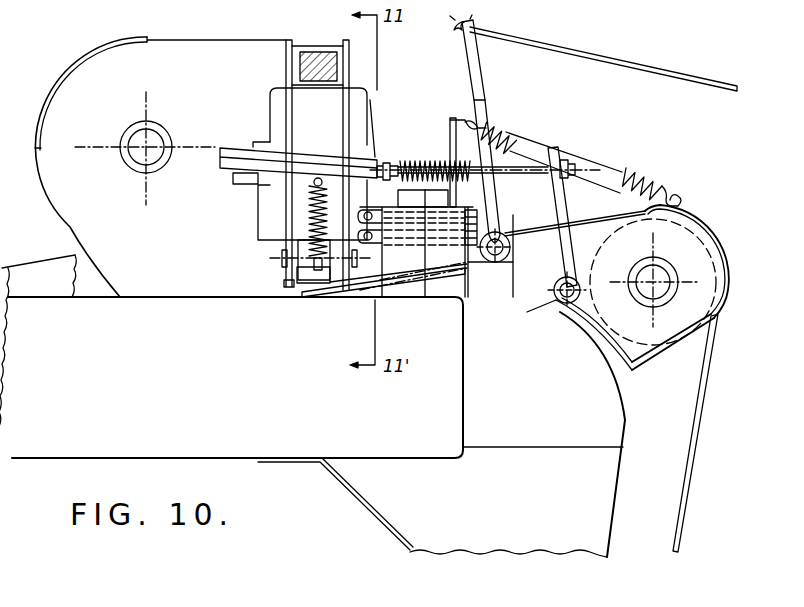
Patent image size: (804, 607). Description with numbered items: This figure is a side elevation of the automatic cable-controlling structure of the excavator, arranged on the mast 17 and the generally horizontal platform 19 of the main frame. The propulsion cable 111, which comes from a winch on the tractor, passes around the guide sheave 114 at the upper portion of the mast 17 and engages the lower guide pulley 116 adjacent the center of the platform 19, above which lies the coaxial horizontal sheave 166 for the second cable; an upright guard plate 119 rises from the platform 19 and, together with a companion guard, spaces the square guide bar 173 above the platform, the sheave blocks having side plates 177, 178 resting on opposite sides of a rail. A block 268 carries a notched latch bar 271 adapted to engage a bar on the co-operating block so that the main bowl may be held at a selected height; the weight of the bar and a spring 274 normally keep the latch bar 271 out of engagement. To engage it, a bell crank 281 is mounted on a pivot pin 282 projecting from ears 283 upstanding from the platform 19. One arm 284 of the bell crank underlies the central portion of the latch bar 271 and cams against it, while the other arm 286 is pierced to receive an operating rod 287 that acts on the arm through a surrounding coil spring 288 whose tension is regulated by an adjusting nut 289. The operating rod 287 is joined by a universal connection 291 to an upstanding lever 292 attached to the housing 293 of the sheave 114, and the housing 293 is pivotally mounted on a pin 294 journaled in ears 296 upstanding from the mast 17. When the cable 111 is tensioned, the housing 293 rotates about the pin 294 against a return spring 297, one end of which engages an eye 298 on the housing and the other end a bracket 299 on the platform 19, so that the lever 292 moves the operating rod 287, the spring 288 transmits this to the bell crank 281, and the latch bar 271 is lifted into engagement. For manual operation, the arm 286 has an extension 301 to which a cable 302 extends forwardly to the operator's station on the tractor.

The mast 17 is at (615, 512).
The platform 19 is at (503, 290).
The propulsion cable 111 is at (690, 470).
The guide sheave 114 is at (653, 350).
The lower guide pulley 116 is at (407, 240).
The guard plate 119 is at (246, 41).
The horizontal sheave 166 is at (454, 222).
The square guide bar 173 is at (320, 52).
The side plate 177 is at (286, 64).
The side plate 178 is at (350, 70).
The block 268 is at (262, 219).
The latch bar 271 is at (297, 281).
The spring 274 is at (309, 202).
The bell crank 281 is at (430, 284).
The pivot pin 282 is at (511, 249).
The ears 283 is at (494, 298).
The arm of bell crank 284 is at (364, 292).
The arm of bell crank 286 is at (498, 213).
The operating rod 287 is at (503, 176).
The coil spring 288 is at (427, 161).
The adjusting nut 289 is at (392, 160).
The universal connection 291 is at (572, 166).
The lever 292 is at (573, 198).
The housing 293 is at (721, 232).
The pin 294 is at (560, 302).
The ears 296 is at (552, 300).
The return spring 297 is at (654, 180).
The eye 298 is at (683, 199).
The bracket 299 is at (466, 124).
The extension 301 is at (486, 74).
The cable 302 is at (631, 64).